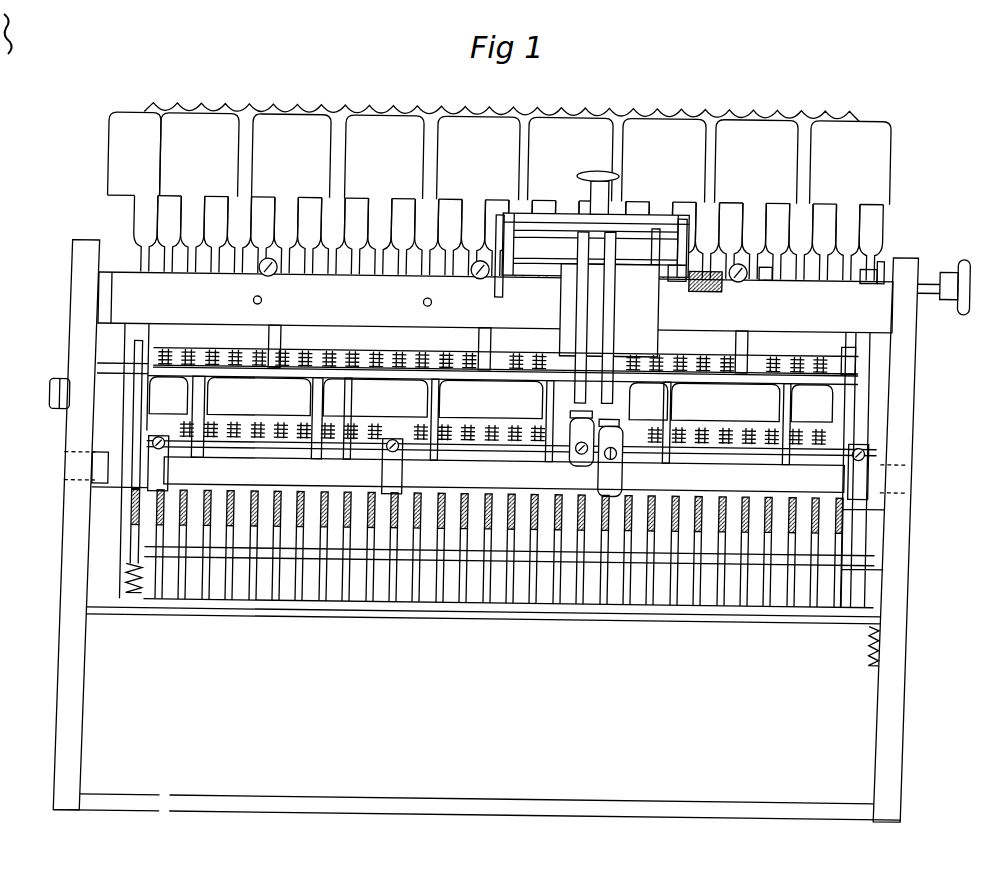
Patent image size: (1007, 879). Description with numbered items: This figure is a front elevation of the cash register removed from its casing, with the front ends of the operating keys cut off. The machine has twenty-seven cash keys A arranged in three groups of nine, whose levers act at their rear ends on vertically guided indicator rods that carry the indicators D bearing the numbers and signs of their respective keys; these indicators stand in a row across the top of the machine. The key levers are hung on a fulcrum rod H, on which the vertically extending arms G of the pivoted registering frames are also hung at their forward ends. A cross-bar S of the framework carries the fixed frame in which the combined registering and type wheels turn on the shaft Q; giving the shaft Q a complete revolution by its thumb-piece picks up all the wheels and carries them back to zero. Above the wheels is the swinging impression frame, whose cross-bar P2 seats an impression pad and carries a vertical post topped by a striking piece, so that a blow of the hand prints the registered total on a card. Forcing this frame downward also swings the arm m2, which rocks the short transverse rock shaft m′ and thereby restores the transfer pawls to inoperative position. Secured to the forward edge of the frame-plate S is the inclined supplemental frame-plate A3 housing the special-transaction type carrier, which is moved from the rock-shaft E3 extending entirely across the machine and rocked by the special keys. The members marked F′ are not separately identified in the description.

The cash keys A is at (522, 598).
The indicators D is at (642, 128).
The cross-bar S is at (495, 294).
The arm m2 is at (735, 258).
The supplemental frame-plate A3 is at (561, 300).
The rock shaft m′ is at (608, 318).
The panels F′ is at (491, 400).
The arms G is at (207, 399).
The cross-bar P2 is at (616, 426).
The rock-shaft E3 is at (508, 468).
The fulcrum rod H is at (688, 540).
The shaft Q is at (929, 270).